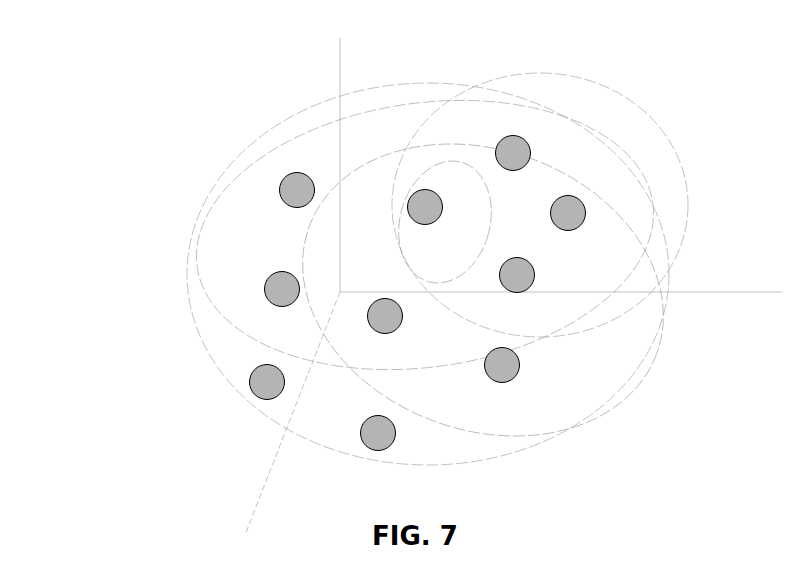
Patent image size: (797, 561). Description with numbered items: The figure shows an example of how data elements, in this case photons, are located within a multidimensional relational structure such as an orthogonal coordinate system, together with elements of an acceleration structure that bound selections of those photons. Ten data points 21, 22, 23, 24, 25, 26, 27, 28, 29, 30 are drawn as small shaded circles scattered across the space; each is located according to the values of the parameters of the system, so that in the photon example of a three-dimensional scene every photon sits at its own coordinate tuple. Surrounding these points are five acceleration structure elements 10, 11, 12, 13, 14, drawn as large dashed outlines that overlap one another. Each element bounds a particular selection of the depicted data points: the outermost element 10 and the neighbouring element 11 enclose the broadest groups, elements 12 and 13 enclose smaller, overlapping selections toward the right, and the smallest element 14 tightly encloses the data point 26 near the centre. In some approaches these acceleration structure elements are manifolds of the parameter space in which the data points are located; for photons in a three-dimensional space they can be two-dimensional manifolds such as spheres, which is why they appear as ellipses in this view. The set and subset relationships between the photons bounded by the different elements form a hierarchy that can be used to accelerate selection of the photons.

The acceleration structure element 10 is at (265, 427).
The acceleration structure element 11 is at (202, 298).
The acceleration structure element 12 is at (605, 390).
The acceleration structure element 13 is at (682, 170).
The acceleration structure element 14 is at (472, 163).
The data point 21 is at (251, 377).
The data point 22 is at (372, 449).
The data point 23 is at (269, 281).
The data point 24 is at (282, 188).
The data point 25 is at (397, 330).
The data point 26 is at (424, 190).
The data point 27 is at (535, 272).
The data point 28 is at (582, 203).
The data point 29 is at (530, 150).
The data point 30 is at (512, 378).